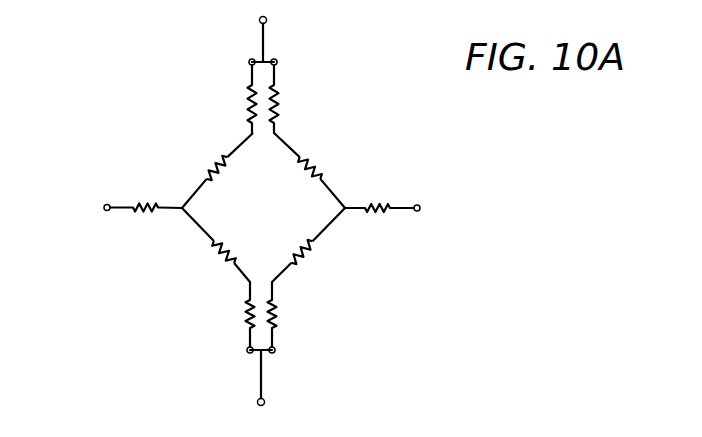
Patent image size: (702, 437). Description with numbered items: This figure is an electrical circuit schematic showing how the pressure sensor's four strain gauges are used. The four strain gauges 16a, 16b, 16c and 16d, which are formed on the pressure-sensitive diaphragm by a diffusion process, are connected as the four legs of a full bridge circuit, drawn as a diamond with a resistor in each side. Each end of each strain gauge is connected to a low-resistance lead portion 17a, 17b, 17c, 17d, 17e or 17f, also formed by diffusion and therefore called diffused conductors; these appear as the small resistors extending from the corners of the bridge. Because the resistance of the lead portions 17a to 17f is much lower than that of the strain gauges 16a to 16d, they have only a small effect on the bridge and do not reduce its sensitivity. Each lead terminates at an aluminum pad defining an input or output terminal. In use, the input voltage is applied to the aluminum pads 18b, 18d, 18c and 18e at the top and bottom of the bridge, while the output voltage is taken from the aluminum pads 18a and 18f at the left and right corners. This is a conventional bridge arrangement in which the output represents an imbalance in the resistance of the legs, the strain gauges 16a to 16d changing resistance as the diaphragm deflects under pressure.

The strain gauge 16a is at (311, 250).
The strain gauge 16b is at (310, 172).
The strain gauge 16c is at (212, 255).
The strain gauge 16d is at (220, 163).
The lead portion 17a is at (385, 200).
The lead portion 17b is at (277, 312).
The lead portion 17c is at (278, 104).
The lead portion 17d is at (247, 327).
The lead portion 17e is at (249, 104).
The lead portion 17f is at (145, 197).
The aluminum pad 18a is at (420, 210).
The aluminum pad 18b is at (274, 354).
The aluminum pad 18c is at (277, 63).
The aluminum pad 18d is at (248, 356).
The aluminum pad 18e is at (249, 63).
The aluminum pad 18f is at (103, 207).